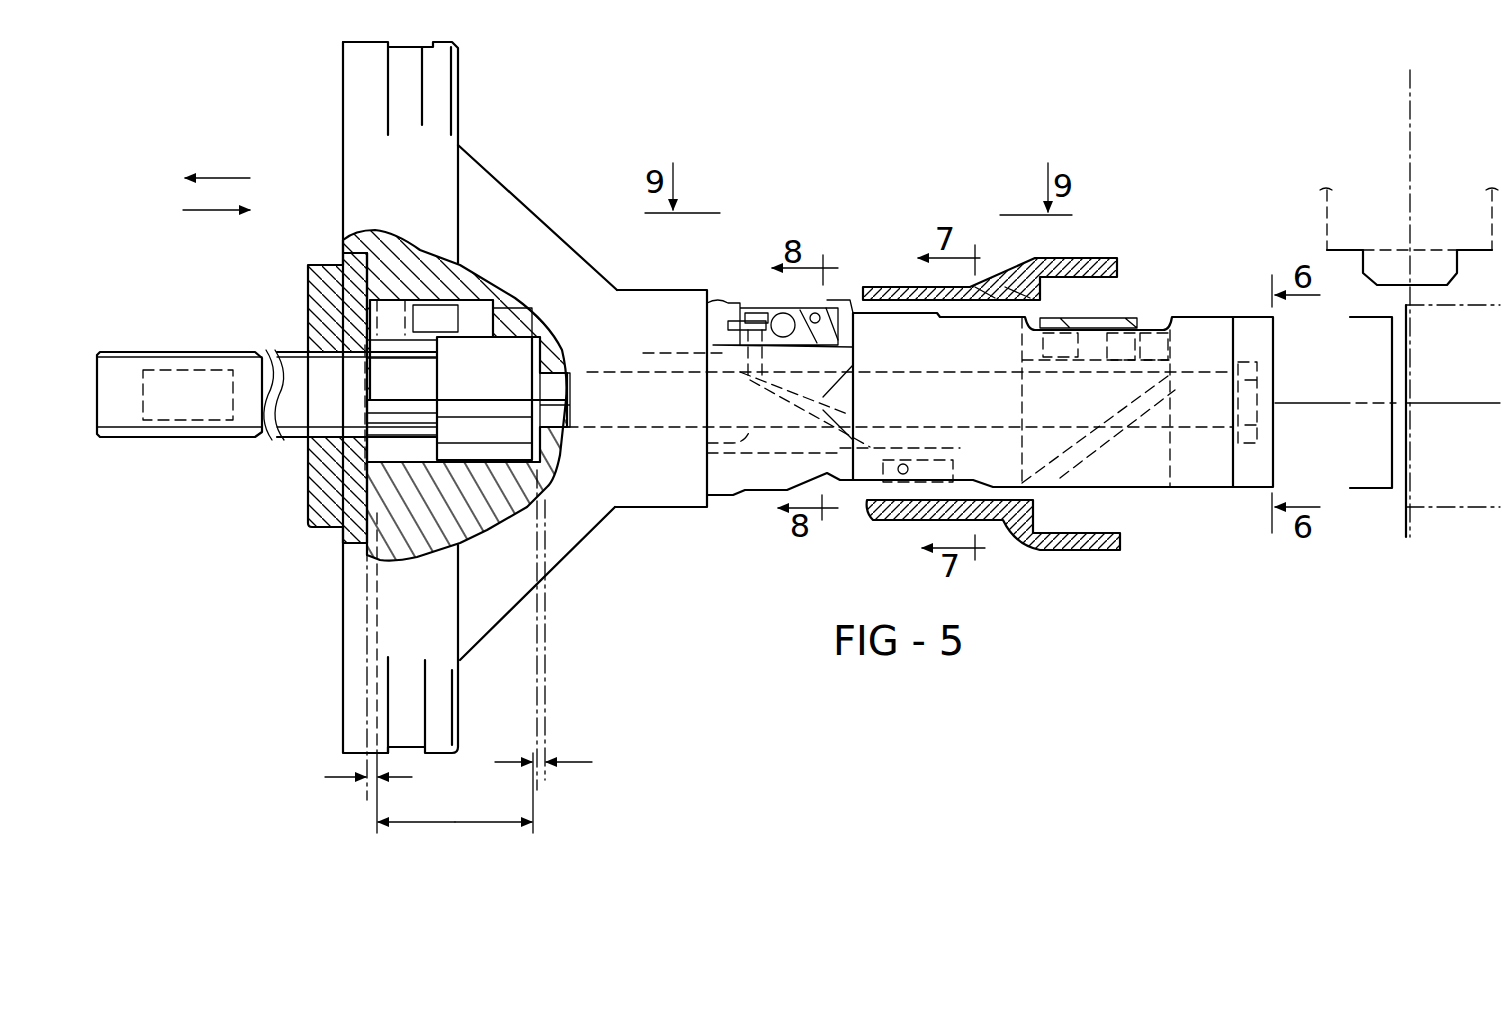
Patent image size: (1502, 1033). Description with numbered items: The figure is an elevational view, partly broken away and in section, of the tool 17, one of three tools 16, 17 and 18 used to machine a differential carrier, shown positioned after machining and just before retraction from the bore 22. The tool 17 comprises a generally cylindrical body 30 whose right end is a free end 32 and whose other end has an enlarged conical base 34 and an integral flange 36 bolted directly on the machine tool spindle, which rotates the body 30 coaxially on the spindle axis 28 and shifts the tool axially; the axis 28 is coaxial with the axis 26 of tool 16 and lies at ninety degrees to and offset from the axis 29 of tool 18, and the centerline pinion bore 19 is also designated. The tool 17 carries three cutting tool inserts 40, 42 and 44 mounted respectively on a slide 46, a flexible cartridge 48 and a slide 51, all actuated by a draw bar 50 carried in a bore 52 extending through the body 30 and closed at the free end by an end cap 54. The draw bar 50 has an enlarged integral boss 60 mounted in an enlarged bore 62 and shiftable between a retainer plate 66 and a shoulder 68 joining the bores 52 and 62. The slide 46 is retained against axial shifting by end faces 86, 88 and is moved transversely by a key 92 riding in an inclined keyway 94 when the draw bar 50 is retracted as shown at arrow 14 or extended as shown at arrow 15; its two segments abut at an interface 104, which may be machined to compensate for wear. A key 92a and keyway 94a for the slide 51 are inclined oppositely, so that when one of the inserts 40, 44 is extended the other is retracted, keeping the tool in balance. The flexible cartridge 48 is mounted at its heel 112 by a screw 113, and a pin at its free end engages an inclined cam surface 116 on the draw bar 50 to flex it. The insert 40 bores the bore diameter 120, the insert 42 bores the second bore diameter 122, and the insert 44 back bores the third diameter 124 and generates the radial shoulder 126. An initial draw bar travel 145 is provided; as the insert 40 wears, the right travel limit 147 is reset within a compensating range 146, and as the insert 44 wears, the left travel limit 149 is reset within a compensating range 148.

The retraction arrow 14 is at (256, 176).
The extension arrow 15 is at (205, 212).
The tool 16 is at (1478, 508).
The tool 17 is at (663, 510).
The tool 18 is at (1327, 207).
The centerline pinion bore 19 is at (1408, 100).
The bore 22 is at (1132, 293).
The spindle axis 26 is at (1462, 402).
The spindle axis 28 is at (1345, 400).
The spindle axis 29 is at (1412, 138).
The body 30 is at (627, 290).
The free end 32 is at (1186, 320).
The enlarged conical base 34 is at (487, 184).
The integral flange 36 is at (458, 690).
The cutting tool insert 40 is at (842, 300).
The cutting tool insert 42 is at (912, 522).
The cutting tool insert 44 is at (1055, 330).
The slide 46 is at (676, 337).
The flexible cartridge 48 is at (1005, 515).
The draw bar 50 is at (300, 352).
The slide 51 is at (1180, 450).
The bore 52 is at (597, 427).
The end cap 54 is at (1263, 492).
The enlarged integral boss 60 is at (466, 393).
The enlarged bore 62 is at (358, 450).
The retainer plate 66 is at (308, 283).
The shoulder 68 is at (548, 340).
The end face 86 is at (722, 300).
The end face 88 is at (860, 310).
The key 92 is at (905, 427).
The key 92a is at (1190, 400).
The keyway 94 is at (866, 372).
The keyway 94a is at (1065, 460).
The interface 104 is at (700, 445).
The heel 112 is at (770, 505).
The screw 113 is at (835, 502).
The inclined cam surface 116 is at (1000, 425).
The bore diameter 120 is at (866, 507).
The bore diameter 122 is at (1008, 300).
The bore diameter 124 is at (1118, 280).
The radial shoulder 126 is at (1060, 278).
The draw bar travel 145 is at (455, 818).
The compensating range 146 is at (545, 780).
The right travel limit 147 is at (534, 722).
The compensating range 148 is at (370, 782).
The left travel limit 149 is at (388, 795).